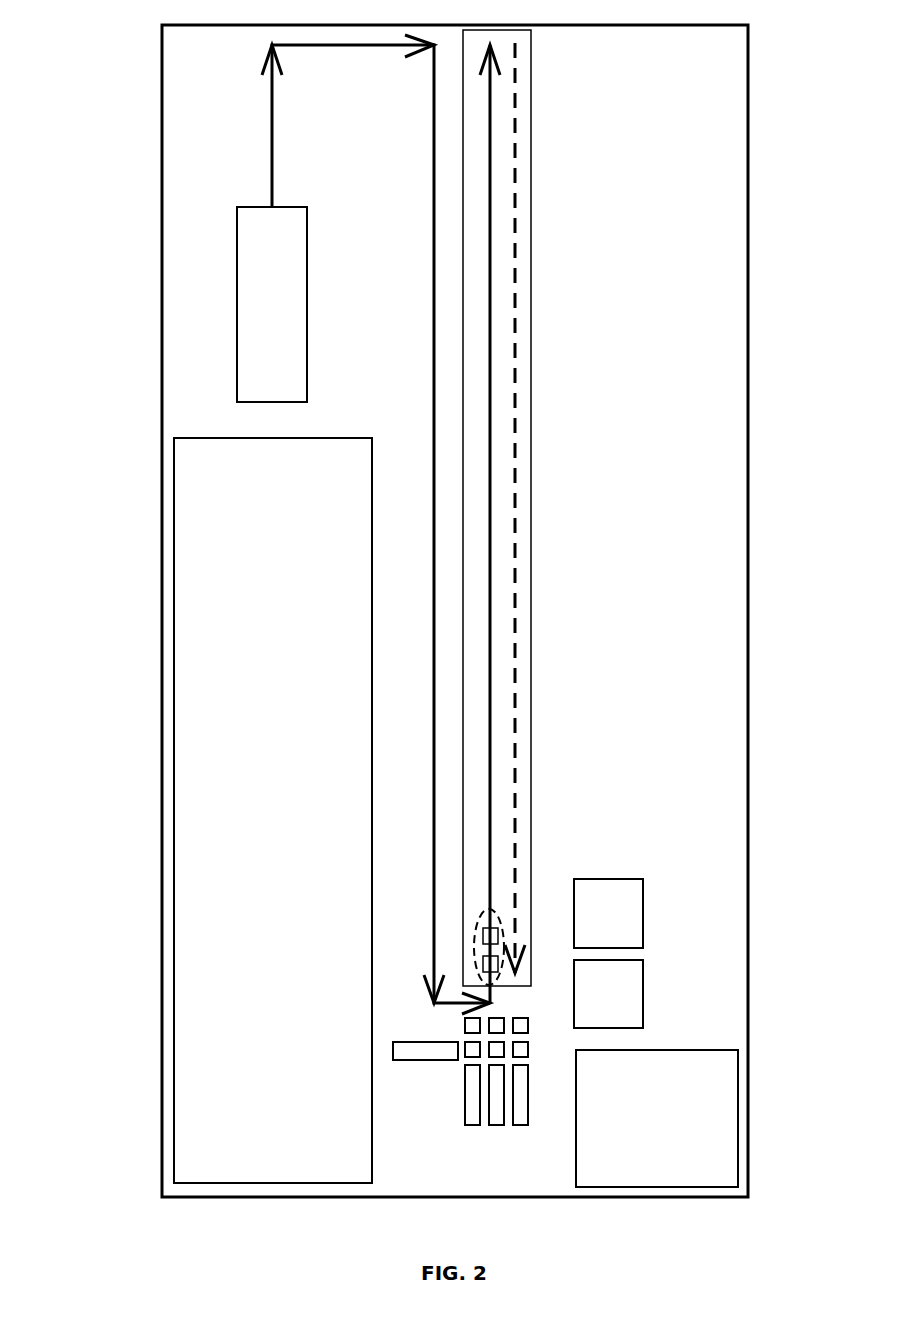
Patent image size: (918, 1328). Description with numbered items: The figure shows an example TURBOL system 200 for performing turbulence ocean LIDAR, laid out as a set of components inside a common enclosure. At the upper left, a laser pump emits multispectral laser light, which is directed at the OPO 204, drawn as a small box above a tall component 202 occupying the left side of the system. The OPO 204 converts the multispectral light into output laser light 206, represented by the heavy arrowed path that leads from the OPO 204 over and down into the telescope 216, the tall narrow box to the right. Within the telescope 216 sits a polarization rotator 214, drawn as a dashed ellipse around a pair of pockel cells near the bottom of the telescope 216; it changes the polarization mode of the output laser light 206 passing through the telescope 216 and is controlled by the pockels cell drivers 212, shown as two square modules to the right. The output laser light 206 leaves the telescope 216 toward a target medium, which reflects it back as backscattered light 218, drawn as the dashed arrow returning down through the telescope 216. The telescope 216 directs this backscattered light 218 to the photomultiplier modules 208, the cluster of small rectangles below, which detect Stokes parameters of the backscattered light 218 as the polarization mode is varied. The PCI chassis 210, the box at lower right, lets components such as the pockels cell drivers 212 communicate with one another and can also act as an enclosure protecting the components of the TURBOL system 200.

The TURBOL system 200 is at (118, 79).
The storage medium 202 is at (174, 553).
The OPO 204 is at (309, 280).
The output laser light 206 is at (268, 123).
The photomultiplier modules 208 is at (523, 1127).
The peripheral component interconnect chassis 210 is at (737, 1088).
The pockels cell drivers 212 is at (645, 963).
The polarization rotator 214 is at (478, 932).
The telescope 216 is at (532, 170).
The backscattered light 218 is at (518, 250).